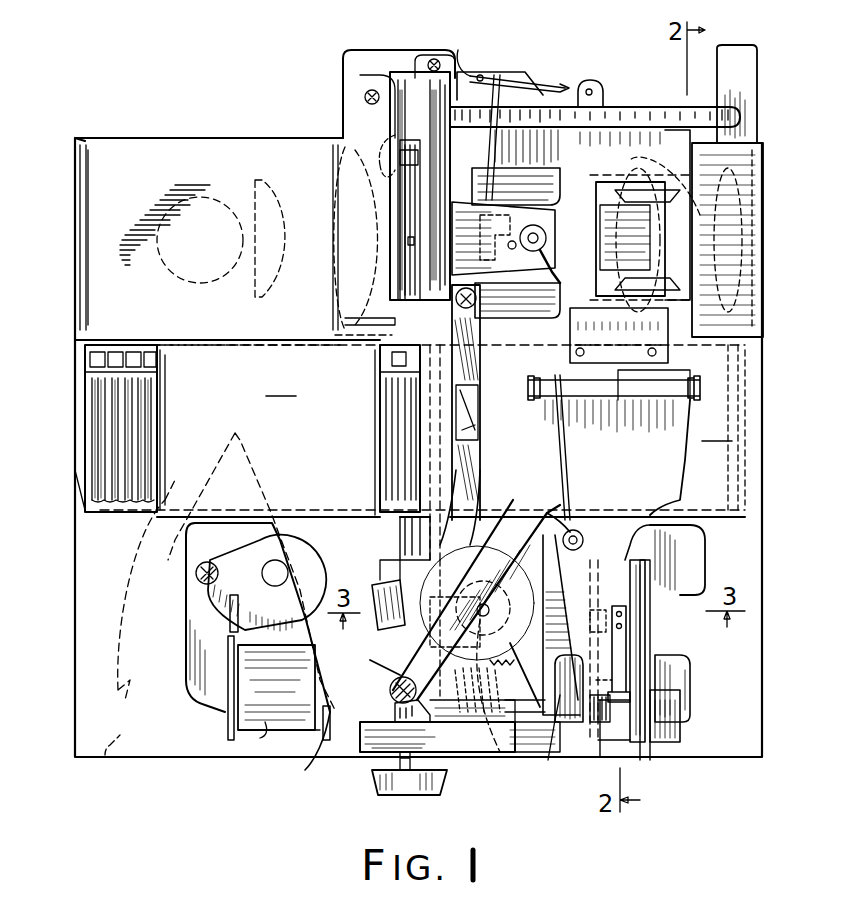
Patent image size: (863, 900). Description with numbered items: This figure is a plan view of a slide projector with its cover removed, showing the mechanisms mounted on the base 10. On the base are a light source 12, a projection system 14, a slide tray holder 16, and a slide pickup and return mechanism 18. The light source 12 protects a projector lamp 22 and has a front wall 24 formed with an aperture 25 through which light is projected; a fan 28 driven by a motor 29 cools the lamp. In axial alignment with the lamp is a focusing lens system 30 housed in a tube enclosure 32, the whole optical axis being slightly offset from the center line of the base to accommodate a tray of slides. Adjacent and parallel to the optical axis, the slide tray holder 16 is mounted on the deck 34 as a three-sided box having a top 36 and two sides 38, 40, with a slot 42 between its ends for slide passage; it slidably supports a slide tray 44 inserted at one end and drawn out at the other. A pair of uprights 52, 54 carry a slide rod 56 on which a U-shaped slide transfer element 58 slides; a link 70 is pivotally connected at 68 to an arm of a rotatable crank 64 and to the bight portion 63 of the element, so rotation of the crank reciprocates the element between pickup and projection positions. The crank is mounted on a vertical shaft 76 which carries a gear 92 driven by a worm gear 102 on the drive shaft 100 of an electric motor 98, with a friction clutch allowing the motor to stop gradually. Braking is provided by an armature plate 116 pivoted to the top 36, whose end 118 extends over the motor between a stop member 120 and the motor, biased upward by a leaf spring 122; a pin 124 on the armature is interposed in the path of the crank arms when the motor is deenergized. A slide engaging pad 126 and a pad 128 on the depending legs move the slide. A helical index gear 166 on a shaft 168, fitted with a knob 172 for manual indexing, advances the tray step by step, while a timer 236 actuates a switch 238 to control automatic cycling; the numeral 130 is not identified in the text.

The base 10 is at (70, 617).
The light source 12 is at (104, 134).
The projection system 14 is at (220, 154).
The slide tray holder 16 is at (172, 415).
The slide pickup and return mechanism 18 is at (498, 467).
The projector lamp 22 is at (165, 215).
The front wall 24 is at (390, 235).
The aperture 25 is at (380, 140).
The fan 28 is at (129, 617).
The motor 29 is at (192, 638).
The focusing lens system 30 is at (645, 221).
The tube enclosure 32 is at (752, 305).
The deck 34 is at (126, 737).
The top 36 is at (499, 406).
The side 38 is at (258, 518).
The side 40 is at (218, 342).
The slot 42 is at (378, 418).
The slide tray 44 is at (78, 392).
The upright 52 is at (408, 75).
The upright 54 is at (473, 742).
The slide rod 56 is at (441, 146).
The slide transfer element 58 is at (447, 373).
The bight portion 63 is at (445, 457).
The crank 64 is at (548, 522).
The pivot 68 is at (388, 686).
The link 70 is at (475, 490).
The shaft 76 is at (490, 610).
The gear 92 is at (490, 656).
The electric motor 98 is at (648, 652).
The drive shaft 100 is at (530, 725).
The worm gear 102 is at (500, 752).
The plate 116 is at (665, 470).
The end 118 is at (585, 705).
The stop member 120 is at (616, 725).
The leaf spring 122 is at (625, 632).
The pin 124 is at (575, 635).
The slide engaging pad 126 is at (405, 533).
The pad 128 is at (350, 322).
The block 130 is at (487, 200).
The helical index gear 166 is at (380, 586).
The shaft 168 is at (398, 712).
The knob 172 is at (370, 783).
The timer 236 is at (630, 108).
The switch 238 is at (533, 82).